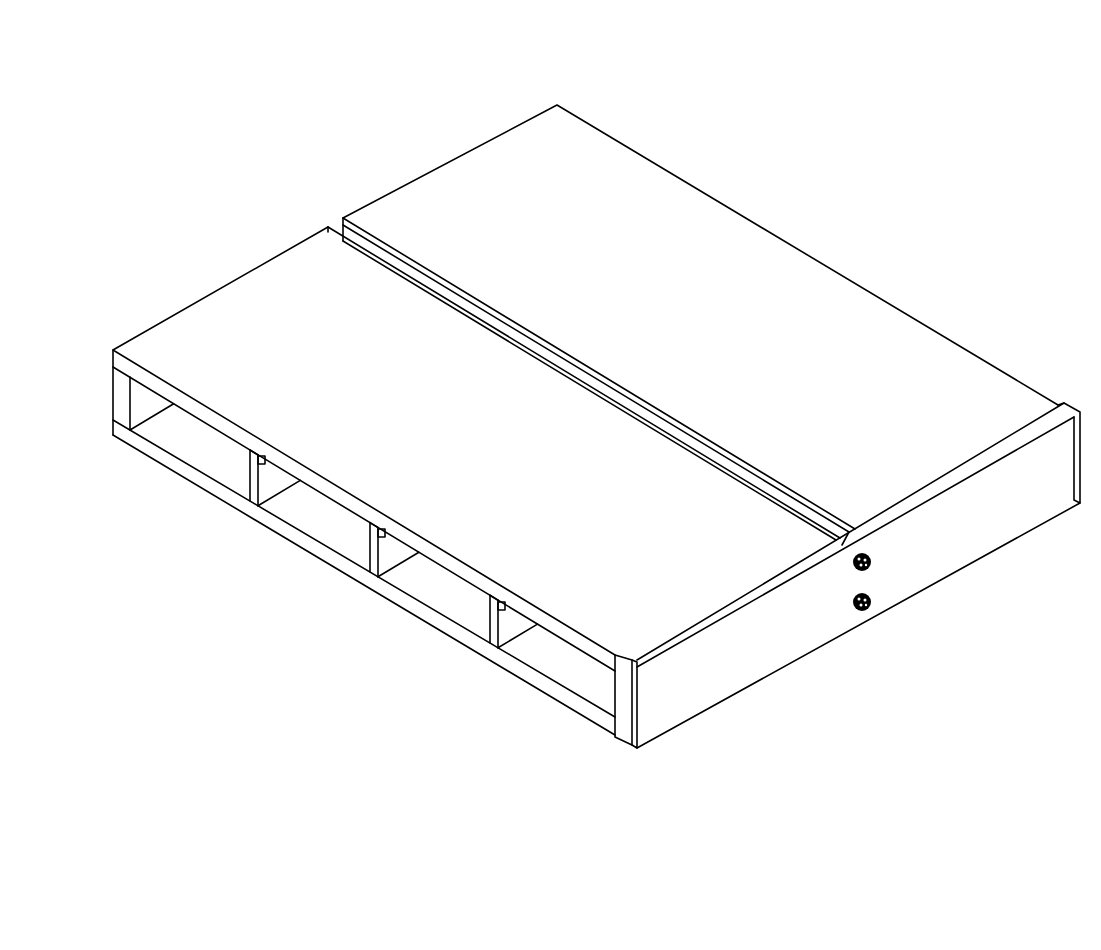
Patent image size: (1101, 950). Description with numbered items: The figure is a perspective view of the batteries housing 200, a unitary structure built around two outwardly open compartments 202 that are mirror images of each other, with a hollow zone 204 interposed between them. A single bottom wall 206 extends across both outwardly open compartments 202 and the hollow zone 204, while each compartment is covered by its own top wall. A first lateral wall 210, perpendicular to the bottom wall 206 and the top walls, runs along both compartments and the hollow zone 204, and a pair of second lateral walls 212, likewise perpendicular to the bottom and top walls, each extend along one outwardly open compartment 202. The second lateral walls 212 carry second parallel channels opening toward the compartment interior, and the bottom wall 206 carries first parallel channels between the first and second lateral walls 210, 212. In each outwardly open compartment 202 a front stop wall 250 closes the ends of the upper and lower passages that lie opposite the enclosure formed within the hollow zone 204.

The batteries housing 200 is at (288, 107).
The outwardly open compartment 202 is at (745, 165).
The hollow zone 204 is at (336, 223).
The bottom wall 206 is at (313, 508).
The first lateral wall 210 is at (772, 637).
The second lateral wall 212 is at (495, 137).
The front stop wall 250 is at (628, 722).